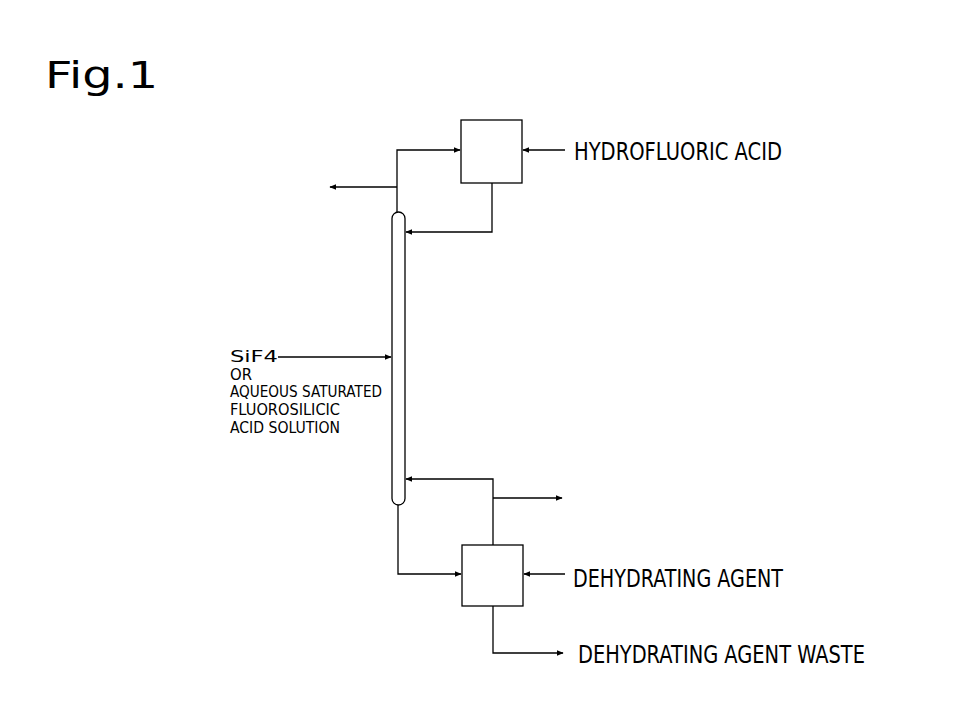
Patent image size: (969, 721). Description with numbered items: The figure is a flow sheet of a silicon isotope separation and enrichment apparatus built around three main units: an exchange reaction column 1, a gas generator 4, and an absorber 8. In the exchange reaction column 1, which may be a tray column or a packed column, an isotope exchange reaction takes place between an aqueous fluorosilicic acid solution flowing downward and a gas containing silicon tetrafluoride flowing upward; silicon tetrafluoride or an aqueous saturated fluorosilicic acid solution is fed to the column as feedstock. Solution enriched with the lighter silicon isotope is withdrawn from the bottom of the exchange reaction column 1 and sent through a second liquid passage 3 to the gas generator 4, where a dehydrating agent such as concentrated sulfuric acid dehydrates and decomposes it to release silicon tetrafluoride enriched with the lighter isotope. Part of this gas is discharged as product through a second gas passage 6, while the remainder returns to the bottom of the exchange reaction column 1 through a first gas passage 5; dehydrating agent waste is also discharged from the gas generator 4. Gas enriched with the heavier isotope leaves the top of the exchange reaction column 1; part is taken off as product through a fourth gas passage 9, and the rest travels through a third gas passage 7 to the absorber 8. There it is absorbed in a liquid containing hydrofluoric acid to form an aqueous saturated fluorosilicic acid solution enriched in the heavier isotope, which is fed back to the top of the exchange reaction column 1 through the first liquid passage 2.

The exchange reaction column 1 is at (387, 298).
The first liquid passage 2 is at (447, 235).
The second liquid passage 3 is at (393, 542).
The gas generator 4 is at (452, 600).
The first gas passage 5 is at (448, 475).
The second gas passage 6 is at (527, 493).
The third gas passage 7 is at (417, 147).
The absorber 8 is at (490, 119).
The fourth gas passage 9 is at (372, 185).